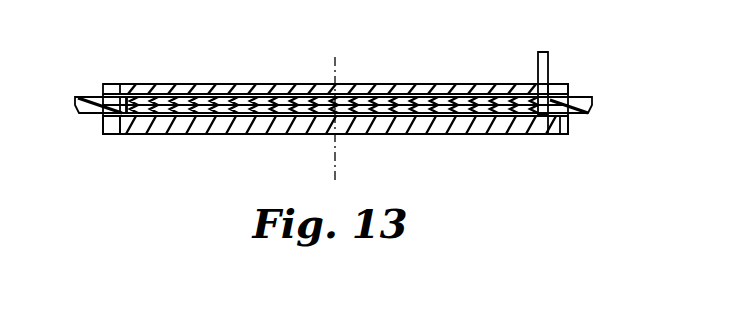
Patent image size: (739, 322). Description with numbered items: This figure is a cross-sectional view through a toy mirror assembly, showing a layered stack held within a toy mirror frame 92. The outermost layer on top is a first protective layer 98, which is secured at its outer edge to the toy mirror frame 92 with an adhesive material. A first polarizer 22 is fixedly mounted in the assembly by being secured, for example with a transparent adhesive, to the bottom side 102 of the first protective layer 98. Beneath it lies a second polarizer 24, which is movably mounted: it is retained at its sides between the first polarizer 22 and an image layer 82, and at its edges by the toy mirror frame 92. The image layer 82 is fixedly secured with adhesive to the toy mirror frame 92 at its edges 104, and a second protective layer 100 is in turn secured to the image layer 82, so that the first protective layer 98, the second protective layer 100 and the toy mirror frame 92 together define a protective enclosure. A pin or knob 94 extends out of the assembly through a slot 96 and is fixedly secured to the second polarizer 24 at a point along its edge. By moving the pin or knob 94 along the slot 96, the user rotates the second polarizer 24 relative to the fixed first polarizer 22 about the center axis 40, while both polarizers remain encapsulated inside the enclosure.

The first polarizer 22 is at (372, 92).
The second polarizer 24 is at (209, 114).
The center axis 40 is at (335, 58).
The image layer 82 is at (413, 125).
The toy mirror frame 92 is at (90, 99).
The pin or knob 94 is at (538, 57).
The slot 96 is at (543, 113).
The first protective layer 98 is at (160, 85).
The second protective layer 100 is at (292, 135).
The bottom side of first protective layer 102 is at (122, 93).
The edges of image layer 104 is at (123, 113).